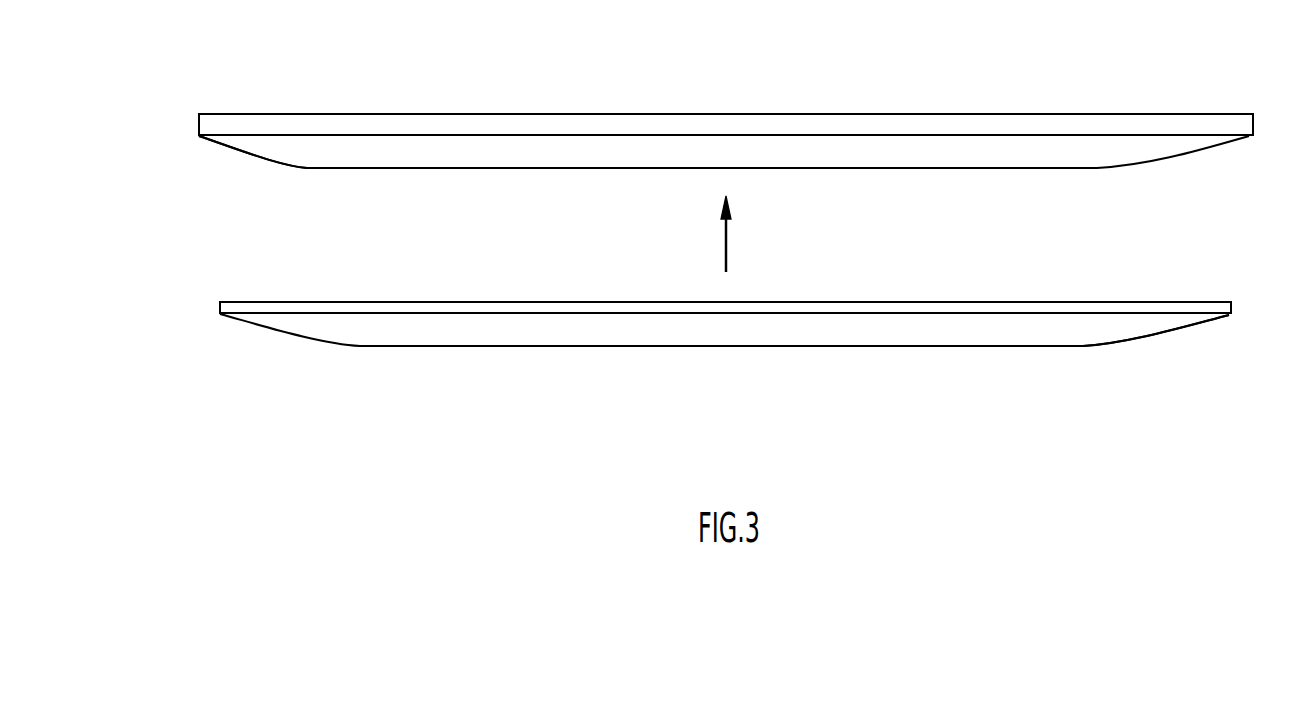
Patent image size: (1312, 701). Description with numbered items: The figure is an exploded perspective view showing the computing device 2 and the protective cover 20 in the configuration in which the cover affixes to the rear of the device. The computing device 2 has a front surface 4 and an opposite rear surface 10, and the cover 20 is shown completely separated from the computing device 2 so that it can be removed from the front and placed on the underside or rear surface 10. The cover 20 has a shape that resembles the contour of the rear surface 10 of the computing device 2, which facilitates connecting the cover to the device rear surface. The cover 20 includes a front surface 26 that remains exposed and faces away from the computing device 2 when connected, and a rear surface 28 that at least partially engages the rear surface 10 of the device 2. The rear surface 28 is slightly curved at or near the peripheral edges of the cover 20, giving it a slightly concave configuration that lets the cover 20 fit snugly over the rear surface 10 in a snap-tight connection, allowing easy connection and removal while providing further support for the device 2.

The computing device 2 is at (693, 130).
The front surface 4 is at (821, 114).
The rear surface 10 is at (1007, 150).
The rear surface 28 is at (300, 165).
The cover 20 is at (1155, 328).
The front surface 26 is at (652, 340).